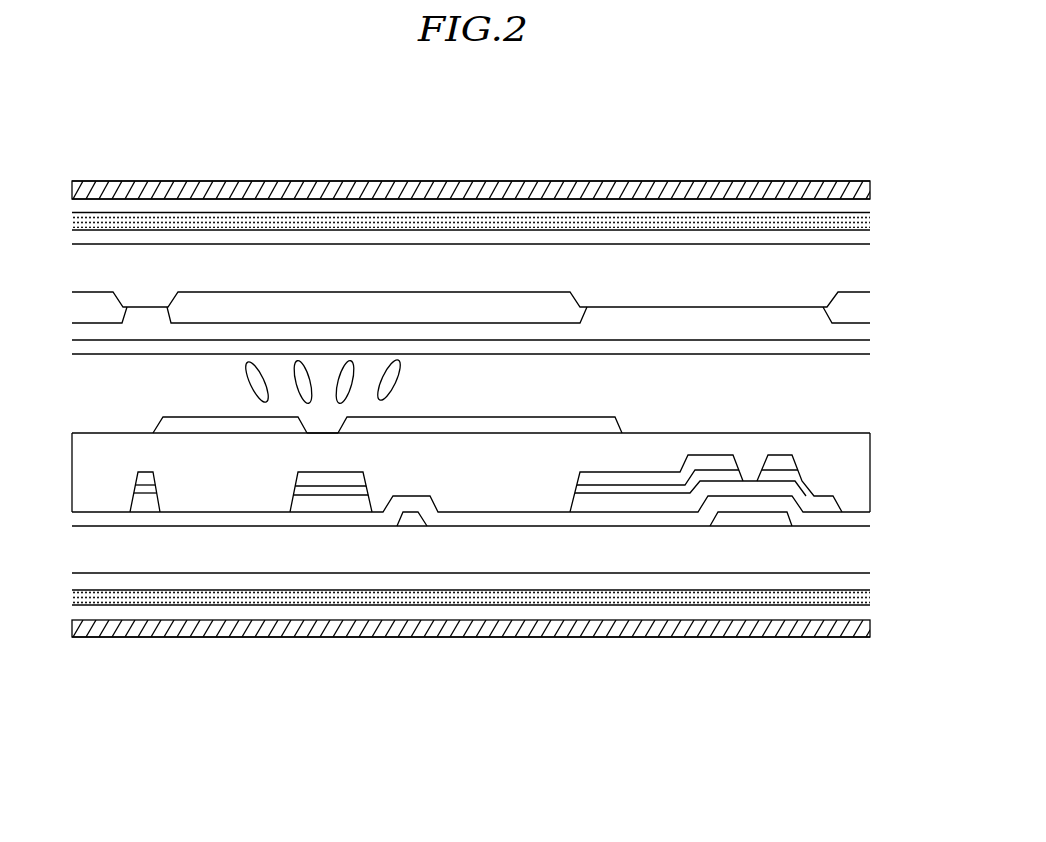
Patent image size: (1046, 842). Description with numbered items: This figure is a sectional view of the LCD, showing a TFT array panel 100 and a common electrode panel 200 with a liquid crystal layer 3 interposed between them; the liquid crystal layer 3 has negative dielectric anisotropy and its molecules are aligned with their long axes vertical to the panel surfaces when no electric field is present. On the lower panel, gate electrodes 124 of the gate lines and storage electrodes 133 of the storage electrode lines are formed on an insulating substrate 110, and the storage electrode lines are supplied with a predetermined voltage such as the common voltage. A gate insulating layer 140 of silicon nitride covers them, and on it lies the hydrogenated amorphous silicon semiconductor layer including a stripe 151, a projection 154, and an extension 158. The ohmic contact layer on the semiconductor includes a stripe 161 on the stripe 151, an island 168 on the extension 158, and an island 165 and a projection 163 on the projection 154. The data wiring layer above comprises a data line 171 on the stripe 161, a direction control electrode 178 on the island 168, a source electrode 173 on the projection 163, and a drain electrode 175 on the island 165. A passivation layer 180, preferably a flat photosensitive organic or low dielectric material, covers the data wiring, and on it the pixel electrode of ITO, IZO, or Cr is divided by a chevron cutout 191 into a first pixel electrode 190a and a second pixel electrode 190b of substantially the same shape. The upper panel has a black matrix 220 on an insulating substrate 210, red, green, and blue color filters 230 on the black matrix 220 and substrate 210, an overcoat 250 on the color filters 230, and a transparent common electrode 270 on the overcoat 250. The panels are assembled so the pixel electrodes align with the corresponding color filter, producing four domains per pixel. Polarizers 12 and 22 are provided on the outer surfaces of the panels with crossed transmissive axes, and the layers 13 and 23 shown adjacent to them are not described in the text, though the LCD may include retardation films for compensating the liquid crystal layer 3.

The common electrode panel 200 is at (893, 182).
The TFT array panel 100 is at (893, 635).
The liquid crystal layer 3 is at (848, 388).
The polarizer 22 is at (575, 192).
The upper compensation film 23 is at (507, 220).
The insulating substrate 210 is at (366, 256).
The black matrix 220 is at (740, 297).
The color filters 230 is at (199, 303).
The overcoat 250 is at (655, 315).
The common electrode 270 is at (798, 347).
The first pixel electrode 190a is at (195, 422).
The second pixel electrode 190b is at (555, 420).
The chevron cutout 191 is at (333, 420).
The passivation layer 180 is at (491, 497).
The gate insulating layer 140 is at (234, 517).
The storage electrode 133 is at (409, 520).
The gate electrode 124 is at (743, 518).
The insulating substrate 110 is at (192, 558).
The lower compensation film 13 is at (450, 597).
The polarizer 12 is at (533, 628).
The stripe 151 is at (142, 500).
The stripe 161 is at (153, 490).
The data line 171 is at (152, 480).
The extension 158 is at (318, 505).
The island 168 is at (335, 492).
The direction control electrode 178 is at (327, 480).
The drain electrode 175 is at (600, 482).
The island 165 is at (643, 492).
The projection 154 is at (684, 503).
The source electrode 173 is at (790, 465).
The projection 163 is at (773, 477).